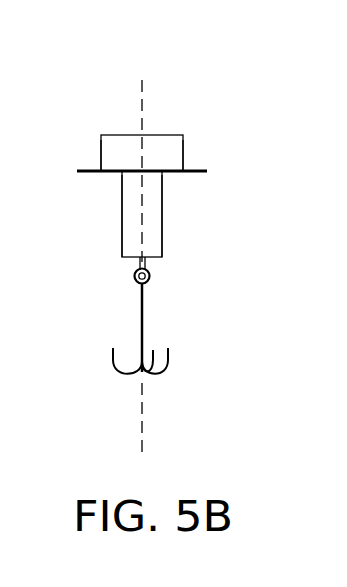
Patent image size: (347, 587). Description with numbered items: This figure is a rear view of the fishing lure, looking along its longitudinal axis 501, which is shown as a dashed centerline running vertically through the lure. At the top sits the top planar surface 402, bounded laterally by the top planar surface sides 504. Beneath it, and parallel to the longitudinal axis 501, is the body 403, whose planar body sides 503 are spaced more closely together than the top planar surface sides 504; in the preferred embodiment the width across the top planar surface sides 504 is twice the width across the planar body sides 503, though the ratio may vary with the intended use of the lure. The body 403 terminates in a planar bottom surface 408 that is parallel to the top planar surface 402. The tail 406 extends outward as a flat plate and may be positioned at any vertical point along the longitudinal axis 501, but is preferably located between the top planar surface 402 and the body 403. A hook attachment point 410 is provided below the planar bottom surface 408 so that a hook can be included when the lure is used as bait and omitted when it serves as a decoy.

The longitudinal axis 501 is at (142, 80).
The top planar surface 402 is at (123, 134).
The top planar surface sides 504 is at (101, 152).
The tail 406 is at (207, 170).
The body 403 is at (150, 227).
The planar body sides 503 is at (120, 191).
The planar bottom surface 408 is at (129, 262).
The hook attachment points 410 is at (146, 266).